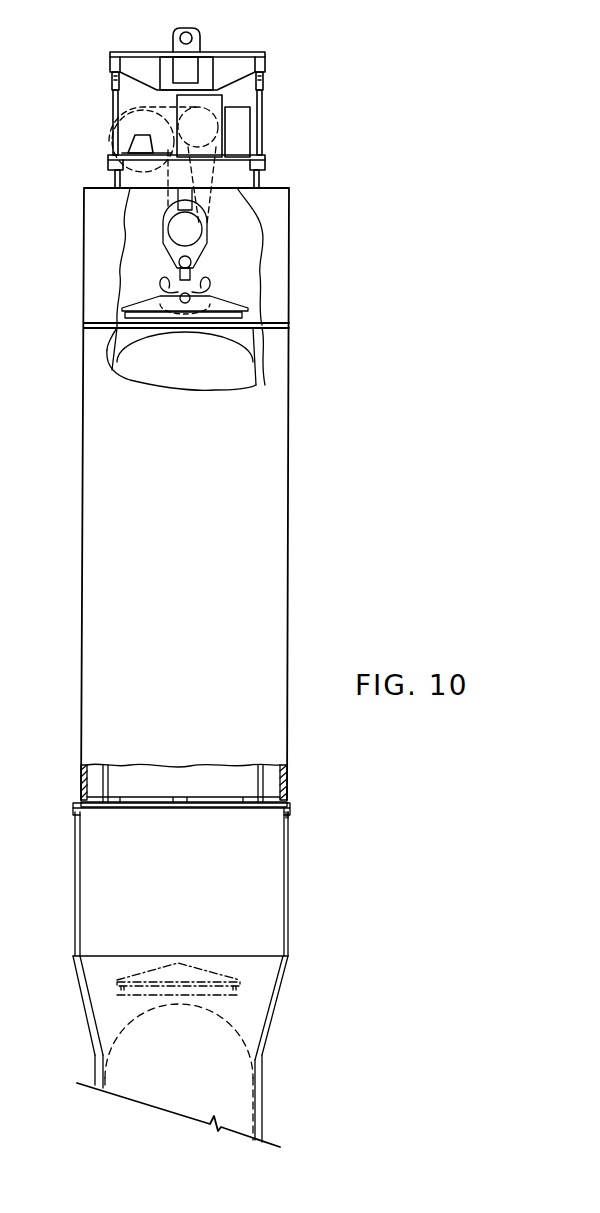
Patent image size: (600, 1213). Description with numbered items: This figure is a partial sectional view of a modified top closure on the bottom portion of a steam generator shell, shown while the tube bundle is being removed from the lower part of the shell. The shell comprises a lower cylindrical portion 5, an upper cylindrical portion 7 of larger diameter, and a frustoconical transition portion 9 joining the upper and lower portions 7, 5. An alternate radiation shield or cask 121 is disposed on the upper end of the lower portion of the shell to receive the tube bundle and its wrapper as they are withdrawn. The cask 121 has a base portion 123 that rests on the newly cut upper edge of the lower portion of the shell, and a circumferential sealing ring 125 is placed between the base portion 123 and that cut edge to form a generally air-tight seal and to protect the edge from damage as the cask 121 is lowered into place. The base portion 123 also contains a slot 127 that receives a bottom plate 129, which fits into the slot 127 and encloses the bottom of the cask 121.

The lower cylindrical portion 5 is at (262, 1097).
The upper cylindrical portion 7 is at (288, 893).
The frustoconical transition portion 9 is at (277, 1002).
The radiation shield or cask 121 is at (287, 778).
The base portion 123 is at (73, 804).
The circumferential sealing ring 125 is at (289, 812).
The slot 127 is at (152, 797).
The bottom plate 129 is at (223, 807).